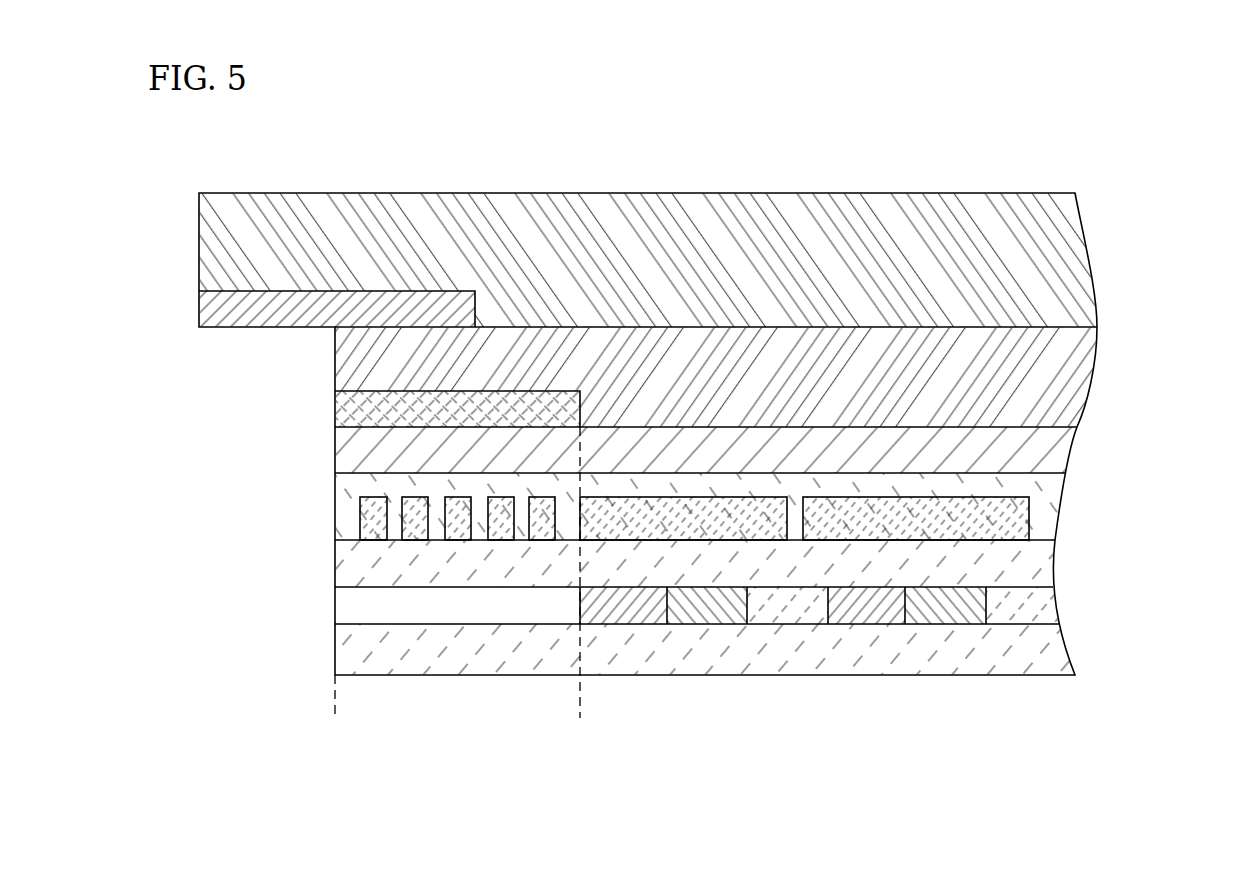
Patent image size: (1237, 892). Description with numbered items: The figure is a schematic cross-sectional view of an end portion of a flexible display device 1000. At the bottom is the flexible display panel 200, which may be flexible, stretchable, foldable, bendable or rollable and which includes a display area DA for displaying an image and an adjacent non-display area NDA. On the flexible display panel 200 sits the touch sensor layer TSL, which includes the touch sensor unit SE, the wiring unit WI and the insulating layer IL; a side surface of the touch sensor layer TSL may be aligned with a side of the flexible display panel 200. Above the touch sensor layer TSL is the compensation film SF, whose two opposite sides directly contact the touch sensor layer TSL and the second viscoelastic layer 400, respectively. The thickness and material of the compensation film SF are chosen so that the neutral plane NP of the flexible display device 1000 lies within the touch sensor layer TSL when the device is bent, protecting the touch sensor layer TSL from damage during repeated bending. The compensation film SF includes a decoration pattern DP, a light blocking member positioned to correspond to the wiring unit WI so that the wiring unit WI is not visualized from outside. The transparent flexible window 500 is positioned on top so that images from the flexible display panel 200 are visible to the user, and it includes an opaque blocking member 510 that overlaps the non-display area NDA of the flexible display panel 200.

The flexible display device 1000 is at (727, 112).
The flexible window 500 is at (1070, 261).
The blocking member 510 is at (216, 313).
The second viscoelastic layer 400 is at (1073, 385).
The decoration pattern DP is at (355, 410).
The compensation film SF is at (1050, 452).
The touch sensor layer TSL is at (1165, 488).
The insulating layer IL is at (1050, 487).
The touch sensor unit SE is at (1020, 528).
The wiring unit WI is at (548, 532).
The neutral plane NP is at (1100, 518).
The flexible display panel 200 is at (333, 540).
The non-display area NDA is at (580, 713).
The display area DA is at (1082, 704).